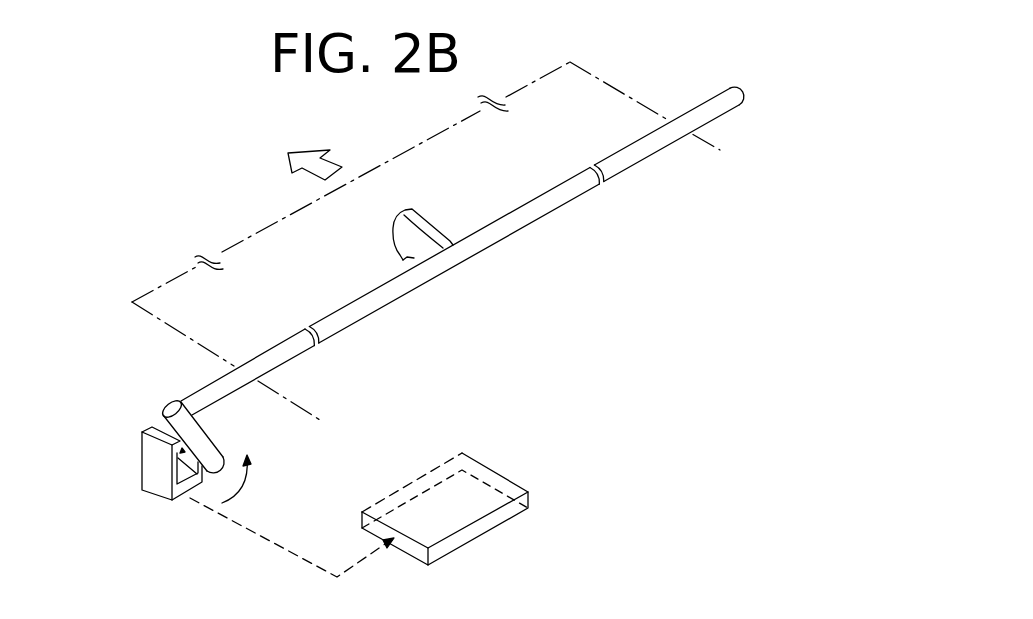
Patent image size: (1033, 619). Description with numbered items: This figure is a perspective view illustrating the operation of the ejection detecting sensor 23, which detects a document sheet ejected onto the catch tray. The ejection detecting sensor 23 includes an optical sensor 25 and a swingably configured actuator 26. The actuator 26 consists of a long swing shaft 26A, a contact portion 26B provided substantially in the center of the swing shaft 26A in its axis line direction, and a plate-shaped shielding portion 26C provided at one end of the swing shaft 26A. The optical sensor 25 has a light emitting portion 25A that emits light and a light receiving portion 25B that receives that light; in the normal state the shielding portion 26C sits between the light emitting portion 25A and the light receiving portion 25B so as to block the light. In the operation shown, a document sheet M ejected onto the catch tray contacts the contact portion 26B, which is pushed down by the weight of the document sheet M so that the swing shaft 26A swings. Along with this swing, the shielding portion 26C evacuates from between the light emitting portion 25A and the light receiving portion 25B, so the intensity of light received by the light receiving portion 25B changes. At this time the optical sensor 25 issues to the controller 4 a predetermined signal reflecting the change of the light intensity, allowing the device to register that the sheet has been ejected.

The controller 4 is at (503, 478).
The ejection detecting sensor 23 is at (290, 267).
The optical sensor 25 is at (172, 483).
The light emitting portion 25A is at (163, 460).
The light receiving portion 25B is at (198, 421).
The actuator 26 is at (521, 269).
The swing shaft 26A is at (412, 290).
The contact portion 26B is at (430, 220).
The shielding portion 26C is at (212, 442).
The document sheet M is at (610, 80).